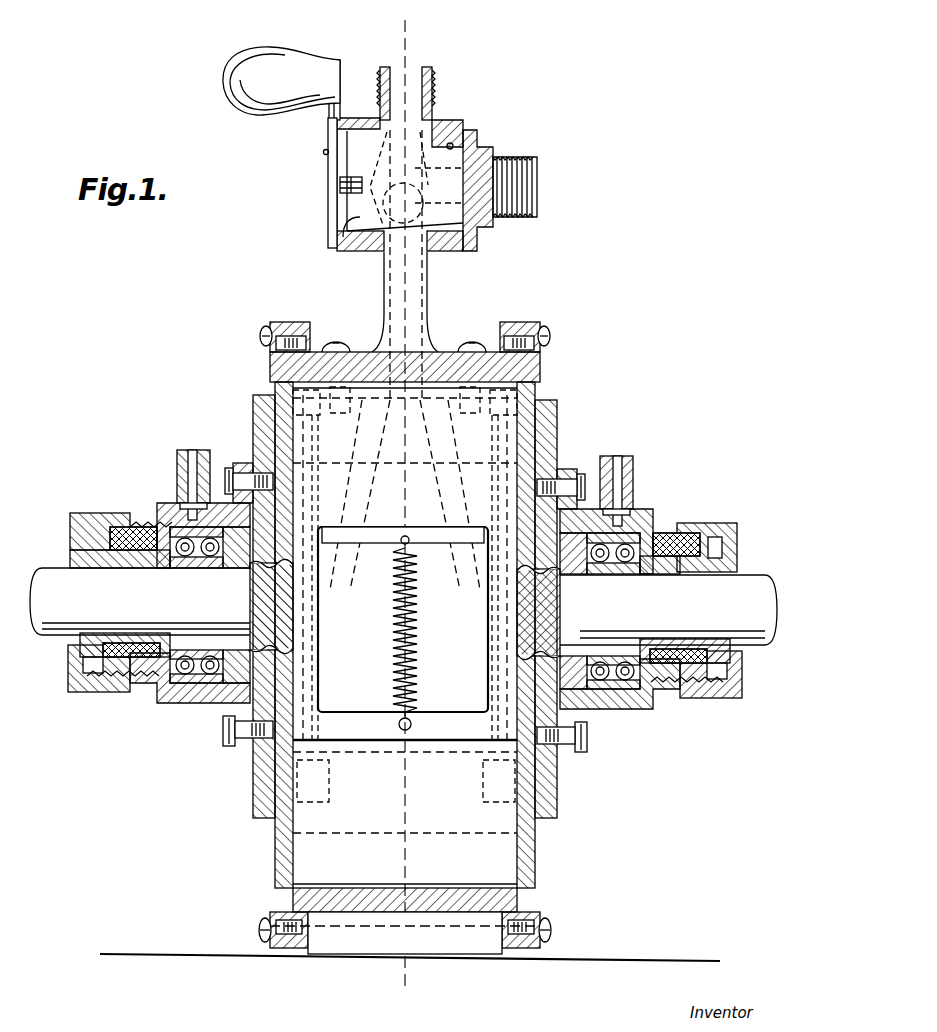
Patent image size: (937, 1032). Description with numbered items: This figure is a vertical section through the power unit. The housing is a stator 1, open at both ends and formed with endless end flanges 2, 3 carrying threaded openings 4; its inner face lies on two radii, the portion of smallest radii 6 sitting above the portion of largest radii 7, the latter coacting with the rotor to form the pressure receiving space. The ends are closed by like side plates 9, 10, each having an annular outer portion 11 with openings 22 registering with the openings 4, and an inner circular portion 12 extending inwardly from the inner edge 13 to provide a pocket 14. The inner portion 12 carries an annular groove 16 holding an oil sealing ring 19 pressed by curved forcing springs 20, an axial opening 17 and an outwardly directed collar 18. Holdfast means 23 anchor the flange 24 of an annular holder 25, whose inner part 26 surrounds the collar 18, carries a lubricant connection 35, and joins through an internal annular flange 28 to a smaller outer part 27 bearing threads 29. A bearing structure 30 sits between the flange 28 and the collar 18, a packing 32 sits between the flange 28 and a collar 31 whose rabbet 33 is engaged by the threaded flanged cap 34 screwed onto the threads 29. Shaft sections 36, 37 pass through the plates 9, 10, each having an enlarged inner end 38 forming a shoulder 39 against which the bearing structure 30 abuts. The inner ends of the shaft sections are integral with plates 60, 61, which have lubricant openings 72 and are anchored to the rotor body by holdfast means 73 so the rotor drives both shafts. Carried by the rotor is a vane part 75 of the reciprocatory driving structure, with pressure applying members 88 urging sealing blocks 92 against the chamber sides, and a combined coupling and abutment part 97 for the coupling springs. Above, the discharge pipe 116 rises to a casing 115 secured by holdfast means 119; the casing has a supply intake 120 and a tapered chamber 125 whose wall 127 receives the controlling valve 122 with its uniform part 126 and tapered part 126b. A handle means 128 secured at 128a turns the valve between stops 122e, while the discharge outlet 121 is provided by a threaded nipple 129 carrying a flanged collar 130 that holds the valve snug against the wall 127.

The stator 1 is at (432, 352).
The endless flange 2 is at (290, 966).
The endless flange 3 is at (502, 945).
The threaded openings 4 is at (290, 902).
The portion of smallest radii 6 is at (374, 352).
The portion of largest radii 7 is at (440, 880).
The side plate 9 is at (264, 371).
The side plate 10 is at (546, 375).
The annular outer portion 11 is at (273, 849).
The inner circular portion 12 is at (253, 779).
The inner edge 13 is at (263, 812).
The pocket 14 is at (265, 415).
The annular groove 16 is at (445, 720).
The axial opening 17 is at (256, 600).
The collar 18 is at (493, 647).
The oil sealing ring 19 is at (277, 537).
The forcing springs 20 is at (517, 690).
The openings 22 is at (267, 947).
The holdfast means 23 is at (230, 728).
The flange 24 is at (234, 757).
The annular holder 25 is at (164, 717).
The inner part 26 is at (228, 470).
The outer part 27 is at (80, 531).
The internal annular flange 28 is at (165, 684).
The threads 29 is at (140, 520).
The bearing structure 30 is at (190, 708).
The collar 31 is at (75, 568).
The packing 32 is at (132, 642).
The rabbet 33 is at (112, 558).
The cap 34 is at (92, 513).
The lubricant connection 35 is at (180, 456).
The shaft section 36 is at (140, 601).
The shaft section 37 is at (668, 610).
The inner end 38 is at (250, 590).
The shoulder 39 is at (236, 600).
The plate 60 is at (243, 465).
The plate 61 is at (560, 455).
The lubricant openings 72 is at (293, 650).
The holdfast means 73 is at (253, 394).
The vane part 75 is at (374, 870).
The pressure applying members 88 is at (318, 478).
The blocks 92 is at (298, 858).
The combined coupling and abutment part 97 is at (361, 545).
The casing 115 is at (445, 251).
The discharge pipe 116 is at (385, 270).
The holdfast means 119 is at (462, 340).
The fluid pressure supply intake 120 is at (430, 80).
The discharge outlet 121 is at (535, 157).
The controlling valve 122 is at (363, 149).
The stops 122e is at (323, 152).
The chamber 125 is at (442, 118).
The part of uniform diameter 126 is at (341, 118).
The tapered part 126b is at (432, 105).
The wall 127 is at (470, 125).
The handle means 128 is at (330, 148).
The securing point 128a is at (340, 185).
The nipple 129 is at (507, 157).
The flanged collar 130 is at (478, 140).